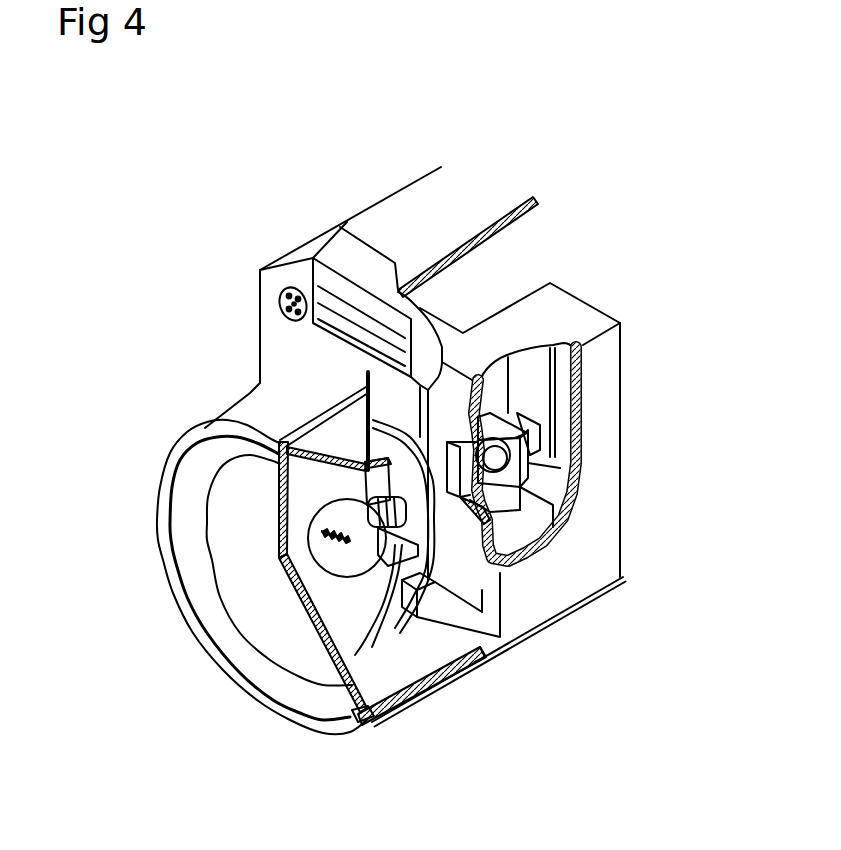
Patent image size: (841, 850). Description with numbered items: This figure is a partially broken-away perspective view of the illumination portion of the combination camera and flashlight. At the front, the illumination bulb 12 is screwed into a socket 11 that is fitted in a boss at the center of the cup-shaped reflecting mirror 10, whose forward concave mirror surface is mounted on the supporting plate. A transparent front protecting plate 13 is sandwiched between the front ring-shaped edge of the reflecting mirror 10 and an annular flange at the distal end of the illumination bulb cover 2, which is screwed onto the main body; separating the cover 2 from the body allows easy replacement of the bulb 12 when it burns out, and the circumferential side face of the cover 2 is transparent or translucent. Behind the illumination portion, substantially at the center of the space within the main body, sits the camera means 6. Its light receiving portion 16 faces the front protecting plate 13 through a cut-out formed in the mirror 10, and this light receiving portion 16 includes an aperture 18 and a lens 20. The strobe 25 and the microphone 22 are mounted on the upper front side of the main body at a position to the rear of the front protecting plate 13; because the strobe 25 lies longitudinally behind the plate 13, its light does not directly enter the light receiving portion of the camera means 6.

The illumination bulb cover 2 is at (258, 410).
The camera means 6 is at (444, 447).
The reflecting mirror 10 is at (387, 653).
The socket 11 is at (423, 620).
The illumination bulb 12 is at (308, 530).
The front protecting plate 13 is at (316, 606).
The light receiving portion 16 is at (490, 487).
The aperture 18 is at (467, 497).
The lens 20 is at (500, 462).
The microphone 22 is at (250, 304).
The strobe 25 is at (313, 263).